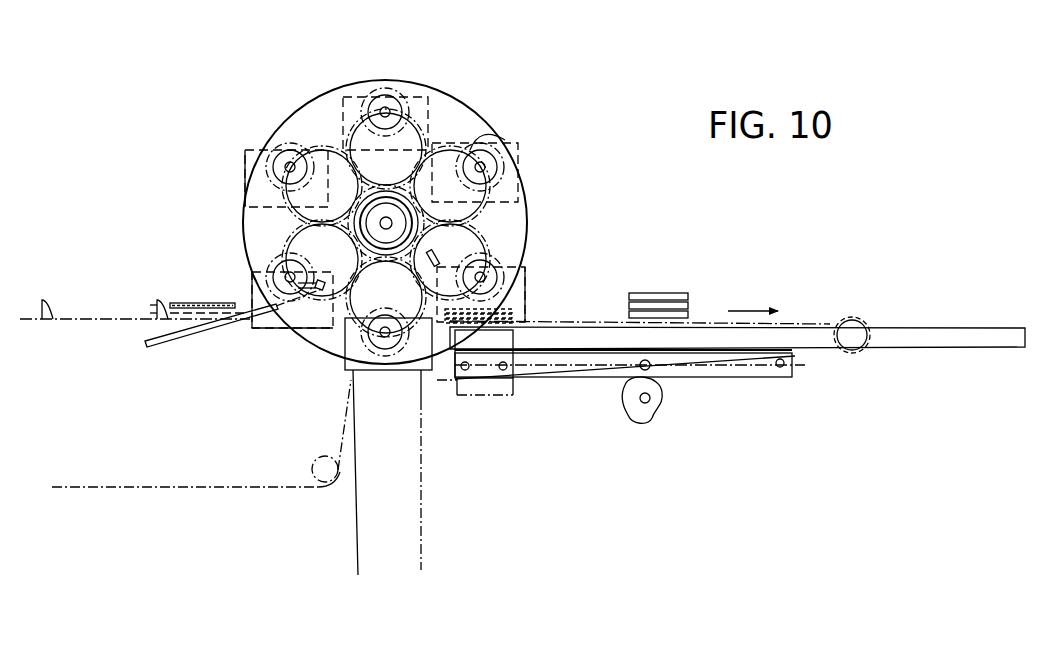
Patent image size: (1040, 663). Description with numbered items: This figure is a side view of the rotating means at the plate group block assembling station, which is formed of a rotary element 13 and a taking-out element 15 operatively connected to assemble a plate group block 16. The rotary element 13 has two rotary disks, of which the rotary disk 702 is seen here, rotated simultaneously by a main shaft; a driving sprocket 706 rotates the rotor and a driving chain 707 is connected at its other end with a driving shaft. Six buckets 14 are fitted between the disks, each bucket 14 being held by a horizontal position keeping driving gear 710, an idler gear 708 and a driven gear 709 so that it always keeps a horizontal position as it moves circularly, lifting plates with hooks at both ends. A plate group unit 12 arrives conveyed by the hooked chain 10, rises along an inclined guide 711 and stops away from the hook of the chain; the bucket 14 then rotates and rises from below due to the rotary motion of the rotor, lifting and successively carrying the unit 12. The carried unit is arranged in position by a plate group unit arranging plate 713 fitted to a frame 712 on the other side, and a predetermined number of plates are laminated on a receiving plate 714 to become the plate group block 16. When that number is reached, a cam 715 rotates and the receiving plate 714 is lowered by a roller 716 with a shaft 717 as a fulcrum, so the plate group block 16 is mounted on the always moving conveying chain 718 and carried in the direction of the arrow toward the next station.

The rotary disk 702 is at (323, 93).
The rotary element 13 is at (473, 104).
The driven gear 709 is at (486, 142).
The bucket 14 is at (523, 151).
The idler gear 708 is at (451, 192).
The horizontal position keeping driving gear 710 is at (396, 217).
The plate group unit arranging plate 713 is at (446, 266).
The receiving plate 714 is at (515, 316).
The plate group block 16 is at (683, 292).
The conveying chain 718 is at (820, 320).
The frame 712 is at (922, 326).
The plate group unit 12 is at (192, 302).
The inclined guide 711 is at (181, 335).
The driving sprocket 706 is at (386, 264).
The hooked chain 10 is at (170, 488).
The driving chain 707 is at (422, 507).
The taking-out element 15 is at (483, 375).
The cam 715 is at (633, 408).
The roller 716 is at (652, 372).
The shaft 717 is at (793, 375).